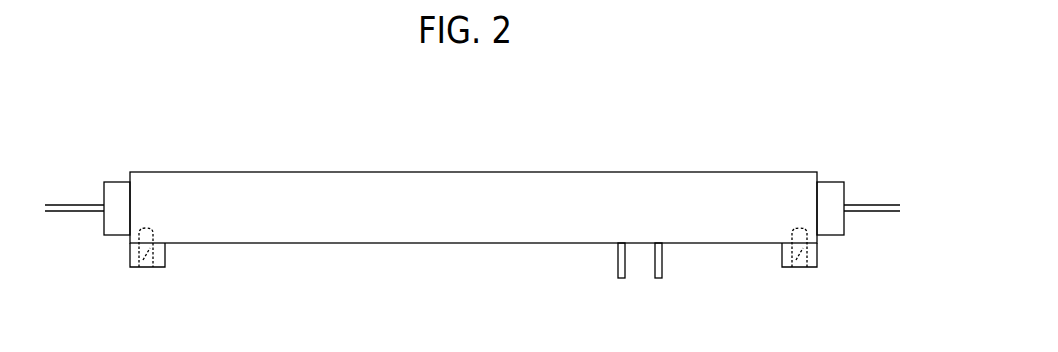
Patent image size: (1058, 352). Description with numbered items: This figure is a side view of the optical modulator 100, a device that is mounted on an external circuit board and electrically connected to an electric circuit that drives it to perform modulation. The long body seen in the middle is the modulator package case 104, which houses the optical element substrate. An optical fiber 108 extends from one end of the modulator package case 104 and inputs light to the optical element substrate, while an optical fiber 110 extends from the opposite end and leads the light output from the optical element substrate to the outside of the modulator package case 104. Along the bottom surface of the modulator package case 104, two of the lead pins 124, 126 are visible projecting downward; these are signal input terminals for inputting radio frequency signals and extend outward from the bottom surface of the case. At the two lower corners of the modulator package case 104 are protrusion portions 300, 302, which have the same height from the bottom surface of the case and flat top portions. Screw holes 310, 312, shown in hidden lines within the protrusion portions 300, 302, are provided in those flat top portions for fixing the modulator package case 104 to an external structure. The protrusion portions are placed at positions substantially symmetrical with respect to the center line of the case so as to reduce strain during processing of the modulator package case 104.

The optical modulator 100 is at (207, 111).
The modulator package case 104 is at (473, 171).
The optical fiber 108 is at (868, 170).
The optical fiber 110 is at (81, 169).
The lead pin 124 is at (579, 282).
The lead pin 126 is at (646, 293).
The protrusion portion 300 is at (136, 293).
The protrusion portion 302 is at (809, 294).
The screw hole 310 is at (199, 257).
The screw hole 312 is at (757, 275).